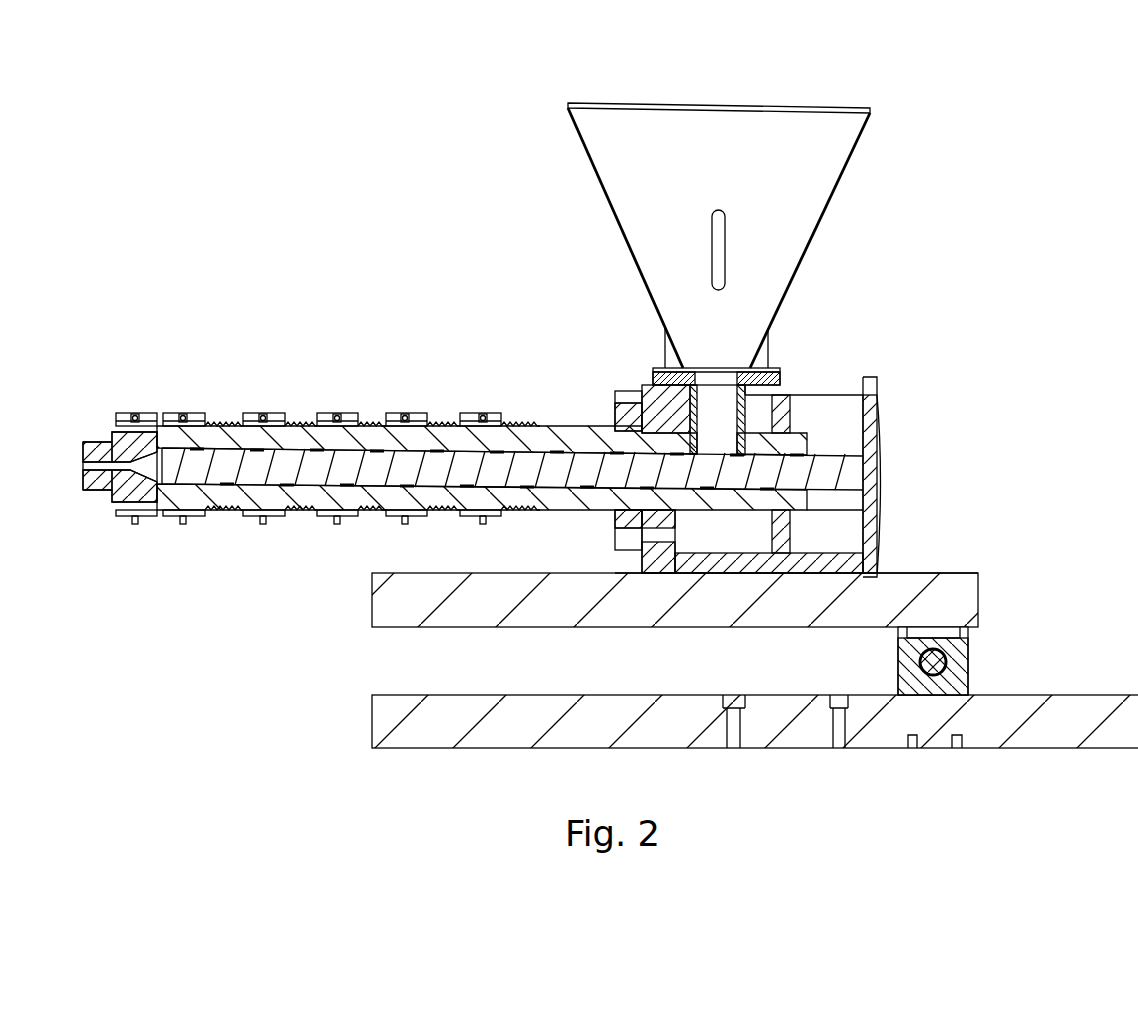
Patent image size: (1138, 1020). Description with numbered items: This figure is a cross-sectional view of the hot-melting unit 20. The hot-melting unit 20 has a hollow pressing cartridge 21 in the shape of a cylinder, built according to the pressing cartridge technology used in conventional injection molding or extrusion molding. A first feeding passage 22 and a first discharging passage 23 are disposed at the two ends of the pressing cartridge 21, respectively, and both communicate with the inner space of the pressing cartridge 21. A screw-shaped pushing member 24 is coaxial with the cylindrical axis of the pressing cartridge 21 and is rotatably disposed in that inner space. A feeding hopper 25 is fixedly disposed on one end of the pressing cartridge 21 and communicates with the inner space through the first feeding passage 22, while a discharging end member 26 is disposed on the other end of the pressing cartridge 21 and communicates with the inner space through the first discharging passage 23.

The hot-melting unit 20 is at (438, 380).
The pressing cartridge 21 is at (297, 440).
The first feeding passage 22 is at (705, 437).
The first discharging passage 23 is at (132, 484).
The screw-shaped pushing member 24 is at (262, 473).
The feeding hopper 25 is at (833, 135).
The discharging end member 26 is at (95, 430).